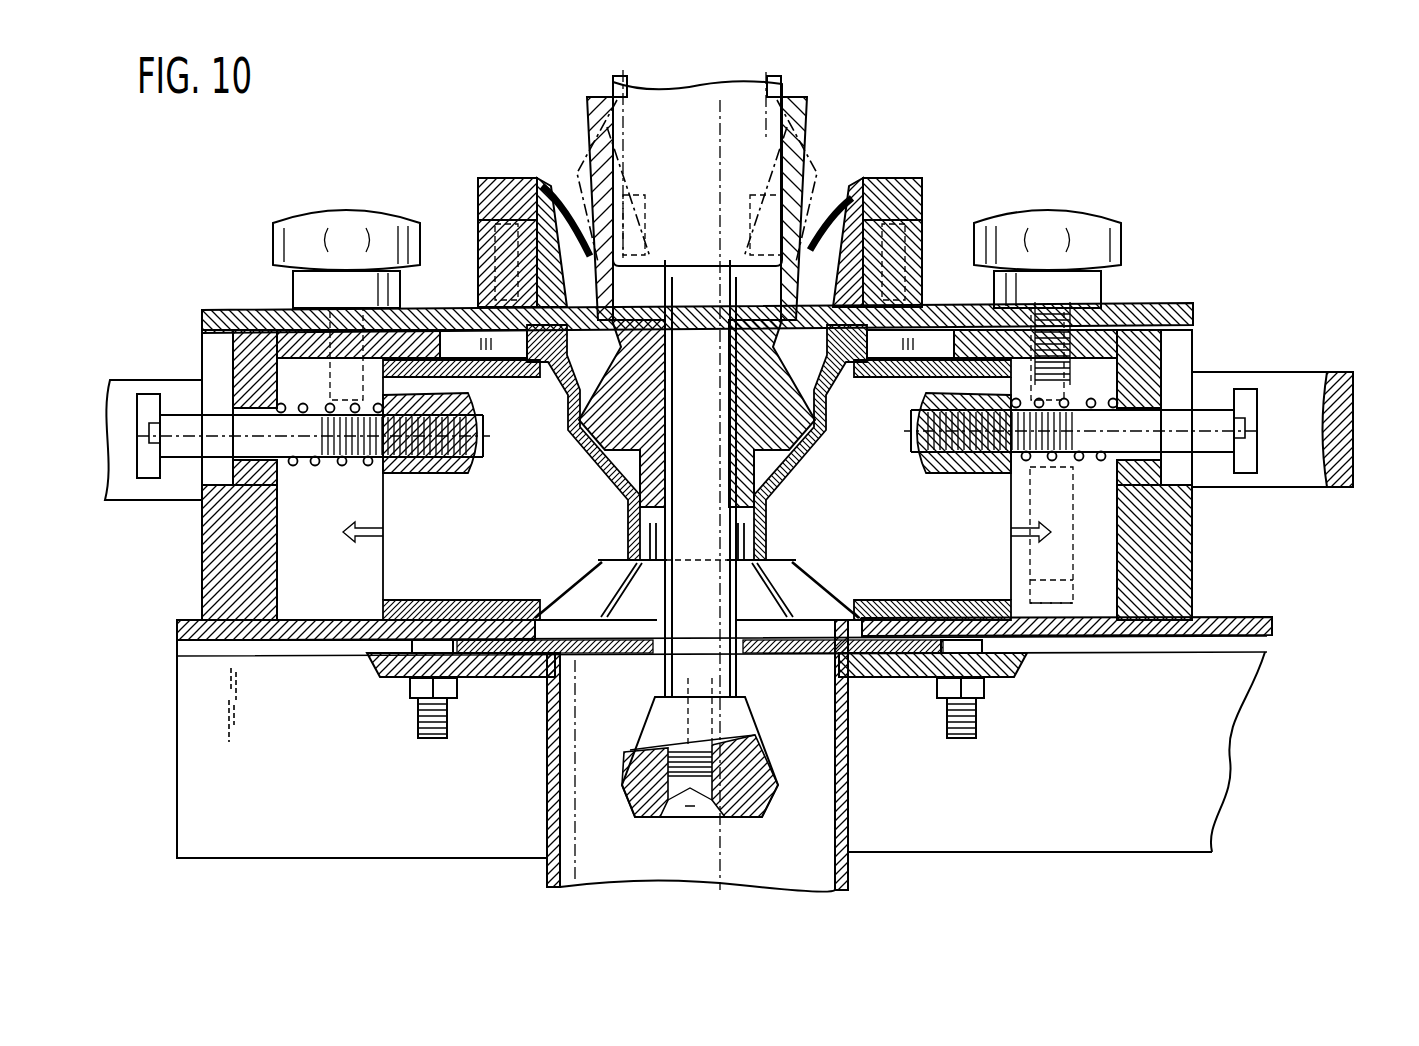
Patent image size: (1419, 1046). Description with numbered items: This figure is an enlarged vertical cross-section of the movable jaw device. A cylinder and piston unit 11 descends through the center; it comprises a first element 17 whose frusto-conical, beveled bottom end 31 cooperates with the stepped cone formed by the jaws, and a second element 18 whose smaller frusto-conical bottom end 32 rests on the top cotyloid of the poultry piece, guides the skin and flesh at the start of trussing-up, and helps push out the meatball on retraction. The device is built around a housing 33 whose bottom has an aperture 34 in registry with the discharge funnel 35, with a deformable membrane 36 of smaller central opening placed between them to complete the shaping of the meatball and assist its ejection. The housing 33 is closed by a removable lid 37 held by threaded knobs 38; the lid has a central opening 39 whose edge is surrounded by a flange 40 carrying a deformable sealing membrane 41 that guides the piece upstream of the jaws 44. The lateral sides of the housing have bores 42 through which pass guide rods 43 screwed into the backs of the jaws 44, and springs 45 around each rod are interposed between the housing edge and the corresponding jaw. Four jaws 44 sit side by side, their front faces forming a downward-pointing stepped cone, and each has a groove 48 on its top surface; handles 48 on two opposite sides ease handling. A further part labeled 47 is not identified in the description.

The cylinder and piston unit 11 is at (830, 152).
The first element 17 is at (802, 108).
The second element 18 is at (653, 84).
The bottom end of first element 31 is at (817, 430).
The bottom end of second element 32 is at (770, 795).
The housing 33 is at (210, 592).
The aperture 34 is at (818, 622).
The discharge funnel 35 is at (550, 795).
The deformable membrane 36 is at (520, 672).
The removable lid 37 is at (1175, 302).
The threaded knobs 38 is at (1120, 237).
The central opening 39 is at (563, 180).
The flange 40 is at (925, 237).
The deformable sealing membrane 41 is at (480, 222).
The bores 42 is at (230, 407).
The guide rods 43 is at (180, 447).
The jaws 44 is at (697, 472).
The springs 45 is at (342, 463).
The slot 47 is at (428, 343).
The handles 48 is at (125, 493).